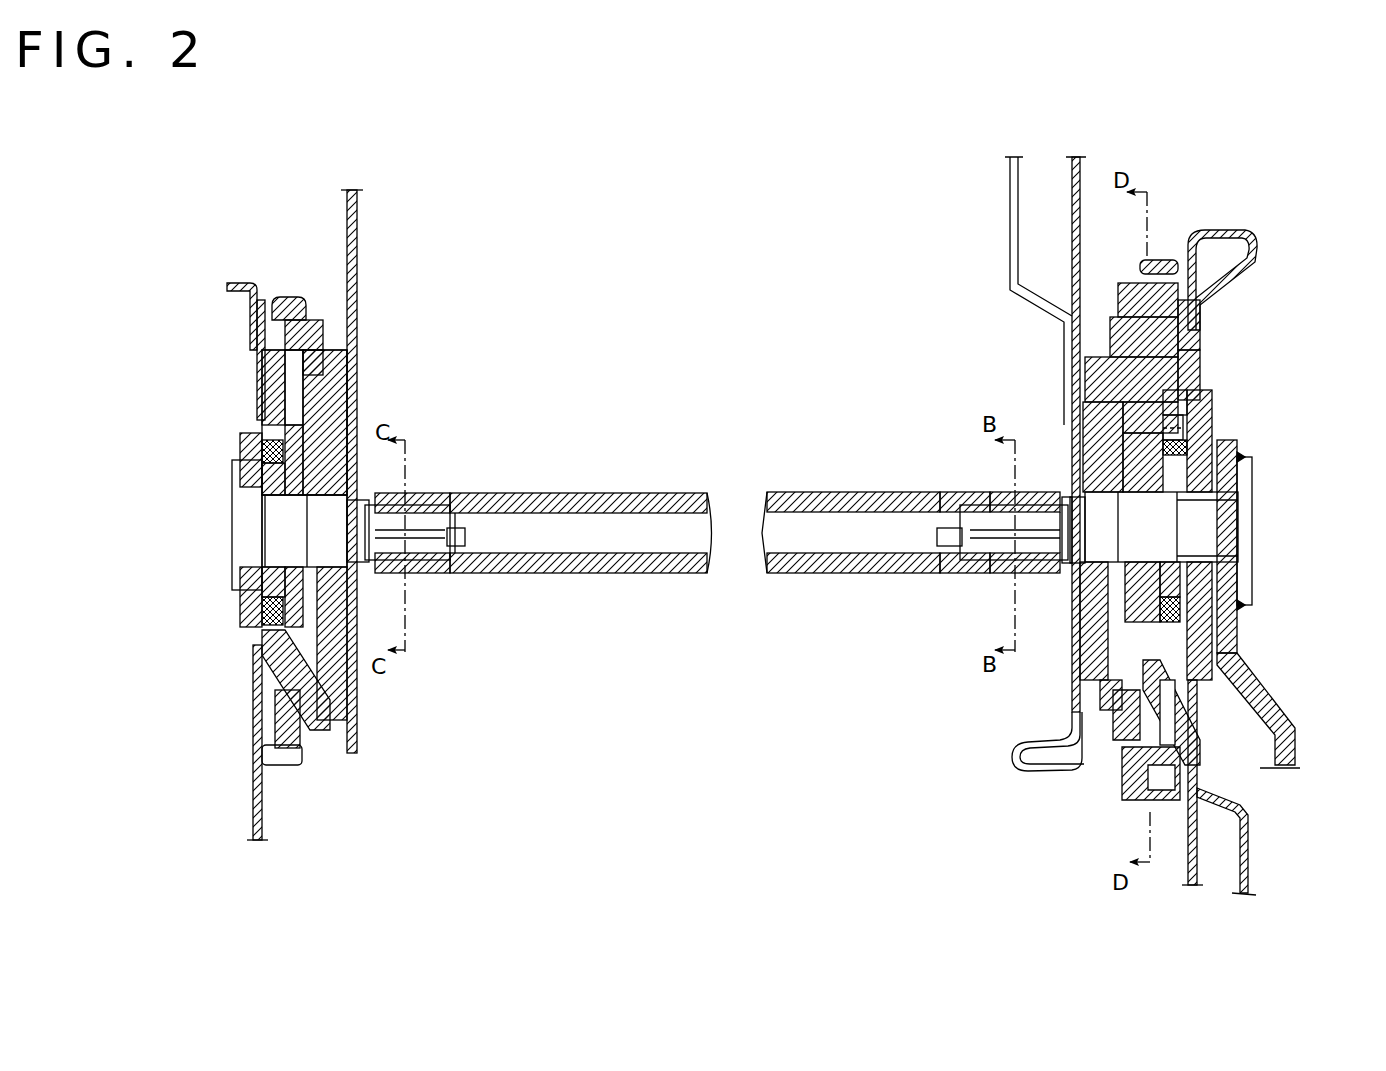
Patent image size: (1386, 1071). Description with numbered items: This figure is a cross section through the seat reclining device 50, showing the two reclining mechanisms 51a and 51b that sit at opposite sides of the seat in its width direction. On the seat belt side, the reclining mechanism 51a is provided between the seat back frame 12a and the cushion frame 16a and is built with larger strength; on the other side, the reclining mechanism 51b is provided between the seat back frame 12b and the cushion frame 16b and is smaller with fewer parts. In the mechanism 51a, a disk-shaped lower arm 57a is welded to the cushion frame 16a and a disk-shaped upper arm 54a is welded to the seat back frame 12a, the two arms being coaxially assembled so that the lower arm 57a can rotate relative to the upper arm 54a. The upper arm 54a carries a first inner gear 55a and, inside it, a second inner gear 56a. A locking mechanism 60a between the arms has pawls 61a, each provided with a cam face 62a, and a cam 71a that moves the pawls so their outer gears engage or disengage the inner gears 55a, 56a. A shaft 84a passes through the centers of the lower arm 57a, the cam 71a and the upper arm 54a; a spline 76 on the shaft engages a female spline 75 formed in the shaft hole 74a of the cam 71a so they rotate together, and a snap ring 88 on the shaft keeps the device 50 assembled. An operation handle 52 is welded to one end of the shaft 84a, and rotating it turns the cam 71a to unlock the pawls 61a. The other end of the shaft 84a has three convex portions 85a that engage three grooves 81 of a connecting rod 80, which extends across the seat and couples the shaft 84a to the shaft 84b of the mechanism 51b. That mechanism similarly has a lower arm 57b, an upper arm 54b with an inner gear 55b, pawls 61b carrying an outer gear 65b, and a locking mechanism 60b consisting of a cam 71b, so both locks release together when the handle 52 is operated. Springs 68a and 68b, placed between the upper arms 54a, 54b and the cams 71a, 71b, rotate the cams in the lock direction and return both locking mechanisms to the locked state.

The seat back frame 12b is at (352, 200).
The cushion frame 16b is at (246, 283).
The reclining mechanism 51b is at (285, 278).
The outer gear 65b is at (258, 330).
The locking mechanism 60b is at (266, 362).
The inner gear 55b is at (262, 368).
The pawls 61b is at (272, 390).
The upper arm 54b is at (322, 362).
The lower arm 57b is at (256, 438).
The spring 68b is at (266, 452).
The cam 71b is at (250, 480).
The shaft 84b is at (246, 528).
The seat reclining device 50 is at (565, 350).
The convex portions 85a is at (420, 505).
The grooves 81 is at (456, 492).
The connecting rod 80 is at (816, 492).
The snap ring 88 is at (1066, 572).
The seat back frame 12a is at (1082, 200).
The reclining mechanism 51a is at (1162, 252).
The cushion frame 16a is at (1256, 236).
The upper arm 54a is at (1110, 327).
The first inner gear 55a is at (1198, 312).
The second inner gear 56a is at (1198, 334).
The pawls 61a is at (1186, 358).
The locking mechanism 60a is at (1192, 386).
The lower arm 57a is at (1212, 393).
The spring 68a is at (1205, 424).
The cam face 62a is at (1072, 420).
The cam 71a is at (1244, 456).
The shaft hole 74a is at (1200, 504).
The female spline 75 is at (1276, 519).
The shaft 84a is at (1212, 526).
The spline 76 is at (1237, 582).
The operation handle 52 is at (1234, 652).